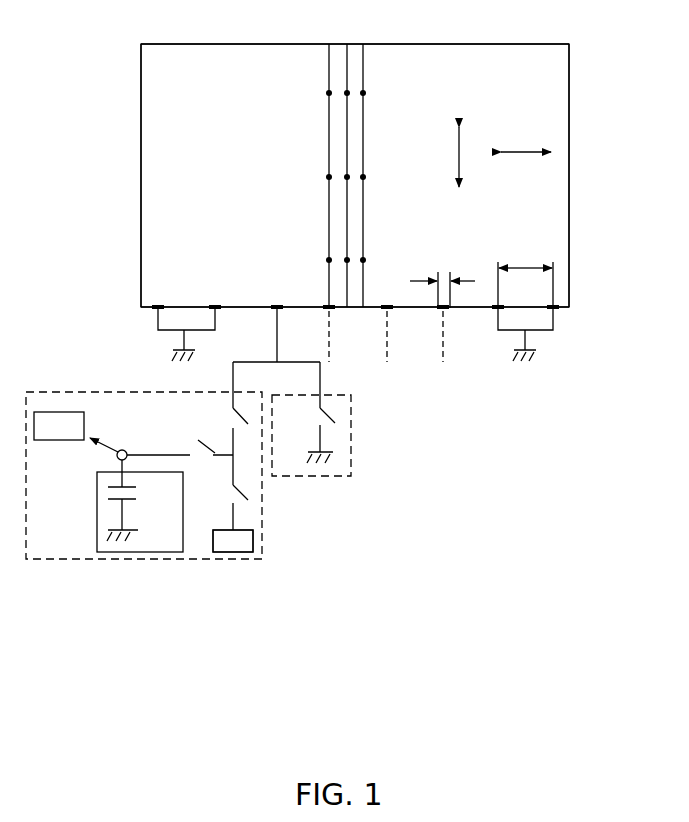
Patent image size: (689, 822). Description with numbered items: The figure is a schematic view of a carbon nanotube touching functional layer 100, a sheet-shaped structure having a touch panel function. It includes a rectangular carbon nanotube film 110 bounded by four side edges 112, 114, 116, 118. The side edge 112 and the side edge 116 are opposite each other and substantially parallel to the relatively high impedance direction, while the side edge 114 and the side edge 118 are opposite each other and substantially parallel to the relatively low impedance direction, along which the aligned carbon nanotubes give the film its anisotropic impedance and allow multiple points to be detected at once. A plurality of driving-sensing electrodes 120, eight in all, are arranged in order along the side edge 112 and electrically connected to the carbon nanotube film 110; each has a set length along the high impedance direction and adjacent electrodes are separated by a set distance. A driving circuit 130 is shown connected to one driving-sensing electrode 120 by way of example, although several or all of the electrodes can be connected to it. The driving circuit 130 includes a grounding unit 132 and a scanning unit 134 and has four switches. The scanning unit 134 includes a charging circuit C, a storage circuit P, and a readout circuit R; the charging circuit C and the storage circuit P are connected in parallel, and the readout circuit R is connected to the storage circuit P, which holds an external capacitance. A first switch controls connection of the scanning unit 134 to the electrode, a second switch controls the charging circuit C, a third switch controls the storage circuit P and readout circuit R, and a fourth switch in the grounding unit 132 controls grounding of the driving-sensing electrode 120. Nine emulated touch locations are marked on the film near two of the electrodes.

The carbon nanotube touching functional layer 100 is at (603, 421).
The carbon nanotube film 110 is at (571, 213).
The side edge 112 is at (414, 312).
The side edge 114 is at (140, 165).
The side edge 116 is at (470, 43).
The side edge 118 is at (571, 118).
The driving-sensing electrode 120 is at (557, 311).
The driving circuit 130 is at (255, 457).
The grounding unit 132 is at (351, 468).
The scanning unit 134 is at (262, 553).
The readout circuit R is at (57, 412).
The storage circuit P is at (97, 530).
The charging circuit C is at (233, 552).